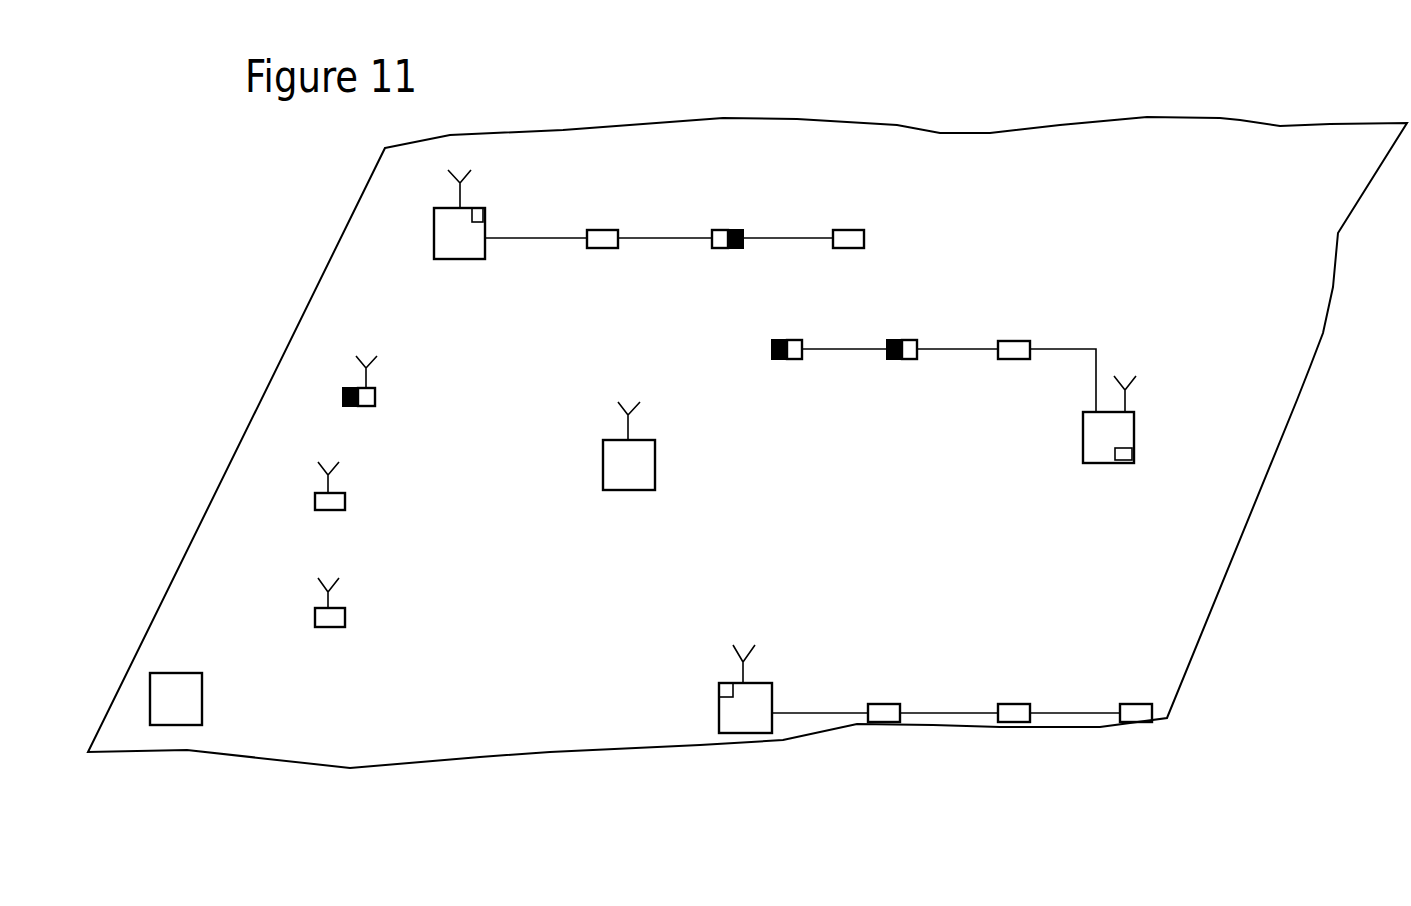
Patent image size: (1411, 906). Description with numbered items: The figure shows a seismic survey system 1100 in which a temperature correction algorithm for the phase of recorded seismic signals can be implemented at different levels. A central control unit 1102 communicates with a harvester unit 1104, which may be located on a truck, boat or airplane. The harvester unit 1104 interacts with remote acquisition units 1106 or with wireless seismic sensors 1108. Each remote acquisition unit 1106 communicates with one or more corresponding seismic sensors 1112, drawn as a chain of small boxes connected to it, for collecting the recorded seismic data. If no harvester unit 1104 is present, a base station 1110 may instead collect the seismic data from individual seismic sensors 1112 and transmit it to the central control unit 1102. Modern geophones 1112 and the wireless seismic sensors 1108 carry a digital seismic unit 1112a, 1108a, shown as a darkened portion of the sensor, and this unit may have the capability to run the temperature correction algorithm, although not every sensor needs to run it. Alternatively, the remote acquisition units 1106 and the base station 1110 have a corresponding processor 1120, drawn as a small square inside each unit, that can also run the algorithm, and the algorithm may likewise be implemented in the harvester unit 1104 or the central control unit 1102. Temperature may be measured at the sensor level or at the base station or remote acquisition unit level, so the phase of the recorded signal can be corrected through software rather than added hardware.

The seismic survey system 1100 is at (912, 90).
The central control unit 1102 is at (202, 695).
The harvester unit 1104 is at (655, 462).
The remote acquisition unit 1106 is at (457, 259).
The wireless seismic sensor 1108 is at (375, 396).
The digital seismic unit 1108a is at (343, 401).
The base station 1110 is at (1102, 463).
The seismic sensor 1112 is at (597, 230).
The digital seismic unit 1112a is at (733, 248).
The processor 1120 is at (478, 210).